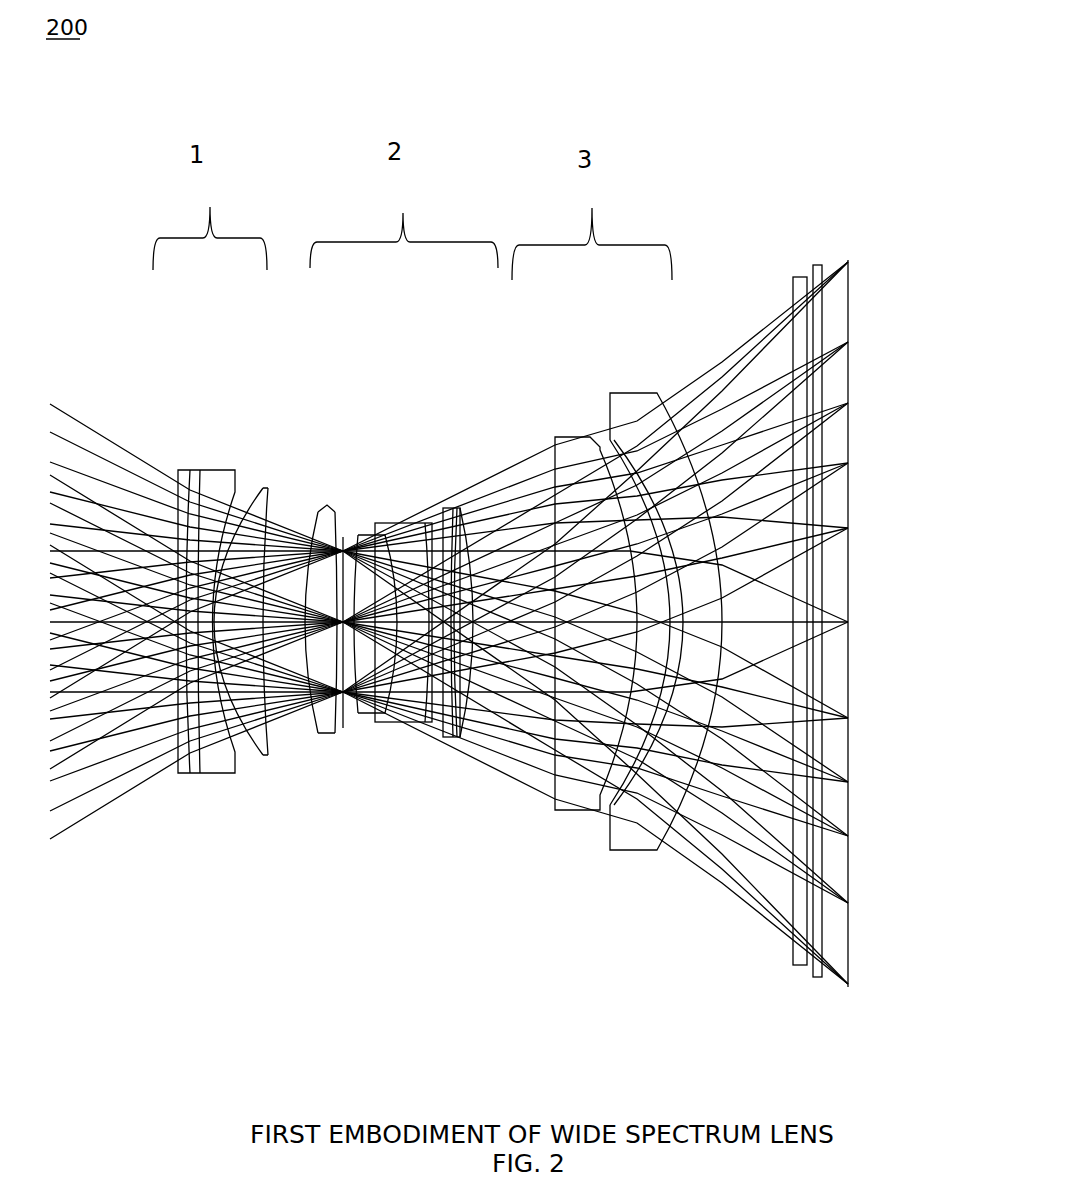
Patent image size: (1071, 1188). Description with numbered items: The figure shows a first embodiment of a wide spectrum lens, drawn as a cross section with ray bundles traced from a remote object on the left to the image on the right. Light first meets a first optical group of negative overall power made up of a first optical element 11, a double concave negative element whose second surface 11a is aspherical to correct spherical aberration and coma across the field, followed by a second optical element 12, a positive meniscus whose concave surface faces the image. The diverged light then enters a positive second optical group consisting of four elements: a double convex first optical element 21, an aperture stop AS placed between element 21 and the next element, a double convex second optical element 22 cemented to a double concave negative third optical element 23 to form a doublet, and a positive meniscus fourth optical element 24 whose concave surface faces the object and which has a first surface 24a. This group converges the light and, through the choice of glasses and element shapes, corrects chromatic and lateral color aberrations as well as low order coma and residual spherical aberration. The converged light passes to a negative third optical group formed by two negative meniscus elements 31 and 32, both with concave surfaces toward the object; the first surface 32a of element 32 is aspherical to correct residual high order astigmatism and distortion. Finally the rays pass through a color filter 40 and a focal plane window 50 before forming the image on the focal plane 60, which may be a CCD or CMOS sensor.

The first optical element 11 is at (208, 492).
The second surface of the first element 11a is at (222, 717).
The second optical element 12 is at (252, 517).
The first optical element 21 is at (328, 533).
The second optical element 22 is at (368, 533).
The third optical element 23 is at (411, 528).
The fourth optical element 24 is at (458, 522).
The first surface of element 24 24a is at (447, 698).
The aperture stop AS is at (345, 708).
The first element of the third optical group 31 is at (572, 457).
The second element of the third optical group 32 is at (636, 418).
The first surface of the second element 32a is at (628, 788).
The color filter 40 is at (800, 337).
The focal plane window 50 is at (823, 313).
The focal plane 60 is at (850, 405).